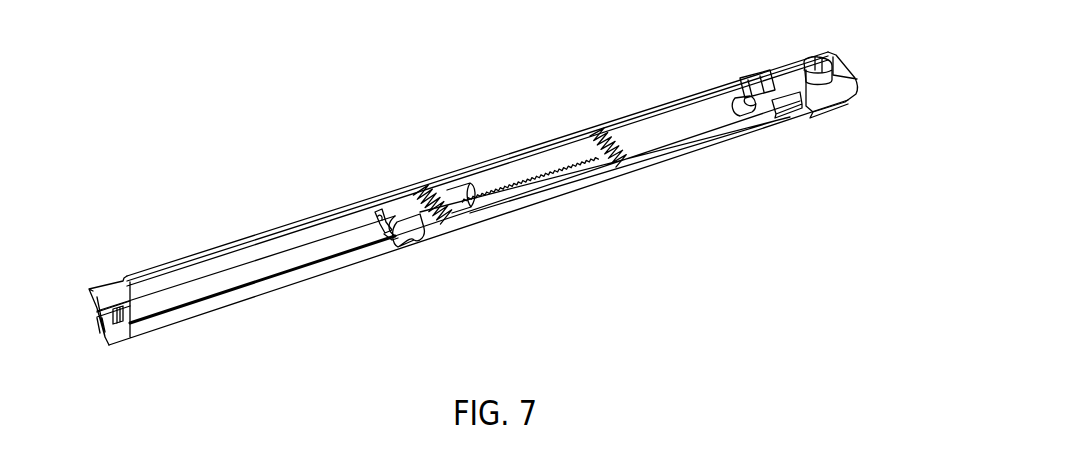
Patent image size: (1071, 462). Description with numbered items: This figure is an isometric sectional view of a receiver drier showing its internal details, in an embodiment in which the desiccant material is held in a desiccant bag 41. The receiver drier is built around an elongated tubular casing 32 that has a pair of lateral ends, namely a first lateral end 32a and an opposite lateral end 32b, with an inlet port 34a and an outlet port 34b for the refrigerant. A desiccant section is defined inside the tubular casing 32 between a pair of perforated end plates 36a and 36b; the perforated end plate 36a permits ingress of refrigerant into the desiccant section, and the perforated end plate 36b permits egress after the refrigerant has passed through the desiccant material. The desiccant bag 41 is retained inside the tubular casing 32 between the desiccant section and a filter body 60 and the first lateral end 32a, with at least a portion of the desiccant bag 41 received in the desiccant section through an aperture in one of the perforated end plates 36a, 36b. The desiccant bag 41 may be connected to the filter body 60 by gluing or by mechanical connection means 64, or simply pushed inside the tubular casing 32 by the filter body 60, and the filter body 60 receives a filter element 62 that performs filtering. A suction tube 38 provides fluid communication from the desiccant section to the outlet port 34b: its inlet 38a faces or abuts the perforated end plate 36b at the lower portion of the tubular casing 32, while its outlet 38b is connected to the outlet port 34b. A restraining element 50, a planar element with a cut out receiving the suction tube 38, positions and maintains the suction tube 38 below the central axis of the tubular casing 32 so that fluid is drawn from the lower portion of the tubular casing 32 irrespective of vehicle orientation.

The tubular casing 32 is at (258, 293).
The first lateral end 32a is at (815, 82).
The lateral end 32b is at (92, 294).
The inlet port 34a is at (828, 73).
The outlet port 34b is at (100, 328).
The perforated end plate 36a is at (593, 137).
The perforated end plate 36b is at (430, 190).
The suction tube 38 is at (288, 258).
The inlet 38a is at (398, 228).
The outlet 38b is at (122, 318).
The desiccant bag 41 is at (670, 127).
The restraining element 50 is at (367, 210).
The filter body 60 is at (783, 100).
The filter element 62 is at (760, 90).
The mechanical connection means 64 is at (753, 107).